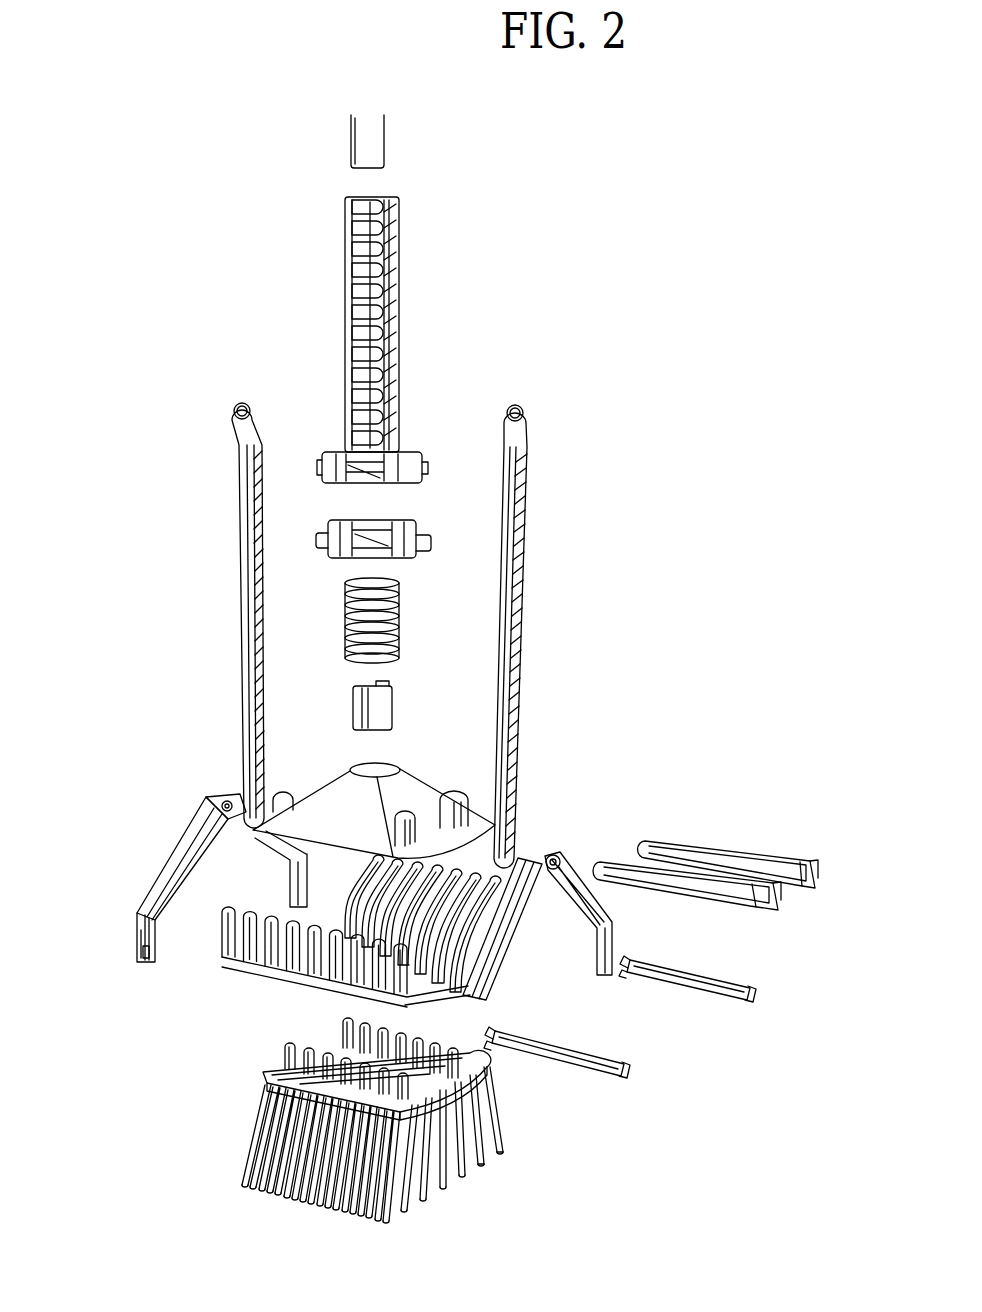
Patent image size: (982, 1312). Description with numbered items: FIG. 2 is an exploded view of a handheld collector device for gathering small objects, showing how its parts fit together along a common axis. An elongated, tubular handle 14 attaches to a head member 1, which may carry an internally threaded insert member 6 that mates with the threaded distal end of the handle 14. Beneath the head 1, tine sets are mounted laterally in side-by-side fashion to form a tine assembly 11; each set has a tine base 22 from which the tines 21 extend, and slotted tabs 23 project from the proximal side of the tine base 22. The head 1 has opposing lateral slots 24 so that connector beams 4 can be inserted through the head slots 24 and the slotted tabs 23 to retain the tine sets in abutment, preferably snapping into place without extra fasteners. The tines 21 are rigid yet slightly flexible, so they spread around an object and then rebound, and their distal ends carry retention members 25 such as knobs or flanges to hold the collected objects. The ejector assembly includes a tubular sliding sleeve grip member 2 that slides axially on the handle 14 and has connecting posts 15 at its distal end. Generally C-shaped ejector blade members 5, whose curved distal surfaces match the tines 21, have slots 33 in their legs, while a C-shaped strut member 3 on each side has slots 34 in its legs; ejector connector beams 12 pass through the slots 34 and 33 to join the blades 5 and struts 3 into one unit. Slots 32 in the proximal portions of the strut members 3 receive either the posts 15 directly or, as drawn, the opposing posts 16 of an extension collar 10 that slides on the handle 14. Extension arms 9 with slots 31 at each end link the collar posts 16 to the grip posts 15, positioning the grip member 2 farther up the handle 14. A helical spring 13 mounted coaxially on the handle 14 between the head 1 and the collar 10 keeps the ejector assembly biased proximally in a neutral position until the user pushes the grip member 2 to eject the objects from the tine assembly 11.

The head member 1 is at (325, 805).
The sliding sleeve grip member 2 is at (385, 322).
The strut member 3 is at (172, 858).
The connector beam 4 is at (742, 855).
The ejector blade member 5 is at (240, 975).
The threaded insert member 6 is at (395, 706).
The extension arm 9 is at (525, 435).
The extension collar 10 is at (335, 522).
The tine assembly 11 is at (290, 1140).
The ejector connector beam 12 is at (752, 1000).
The helical spring 13 is at (345, 600).
The handle 14 is at (353, 168).
The connecting post 15 is at (322, 462).
The connecting post 16 is at (430, 540).
The tine 21 is at (490, 1125).
The tine base 22 is at (487, 1090).
The slotted tab 23 is at (288, 1055).
The lateral slot 24 is at (448, 828).
The retention member 25 is at (490, 1155).
The slot 31 is at (520, 408).
The slot 32 is at (215, 805).
The slot 33 is at (225, 912).
The slot 34 is at (140, 950).